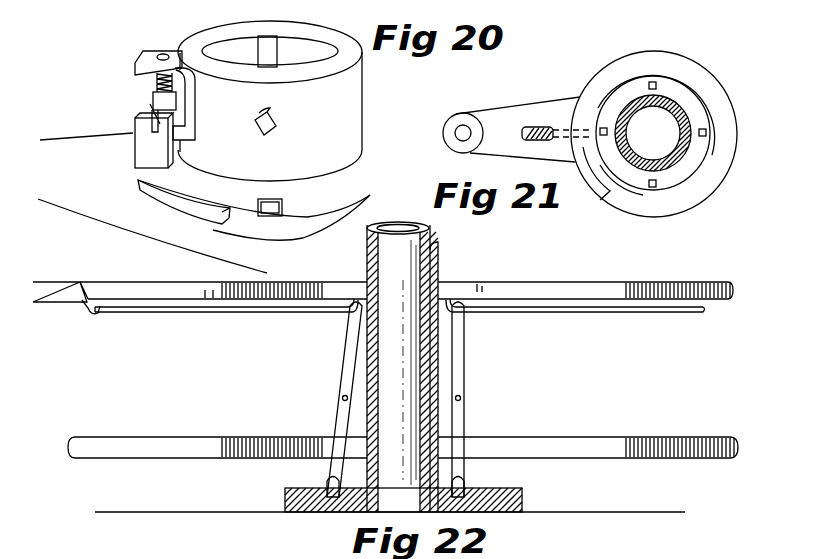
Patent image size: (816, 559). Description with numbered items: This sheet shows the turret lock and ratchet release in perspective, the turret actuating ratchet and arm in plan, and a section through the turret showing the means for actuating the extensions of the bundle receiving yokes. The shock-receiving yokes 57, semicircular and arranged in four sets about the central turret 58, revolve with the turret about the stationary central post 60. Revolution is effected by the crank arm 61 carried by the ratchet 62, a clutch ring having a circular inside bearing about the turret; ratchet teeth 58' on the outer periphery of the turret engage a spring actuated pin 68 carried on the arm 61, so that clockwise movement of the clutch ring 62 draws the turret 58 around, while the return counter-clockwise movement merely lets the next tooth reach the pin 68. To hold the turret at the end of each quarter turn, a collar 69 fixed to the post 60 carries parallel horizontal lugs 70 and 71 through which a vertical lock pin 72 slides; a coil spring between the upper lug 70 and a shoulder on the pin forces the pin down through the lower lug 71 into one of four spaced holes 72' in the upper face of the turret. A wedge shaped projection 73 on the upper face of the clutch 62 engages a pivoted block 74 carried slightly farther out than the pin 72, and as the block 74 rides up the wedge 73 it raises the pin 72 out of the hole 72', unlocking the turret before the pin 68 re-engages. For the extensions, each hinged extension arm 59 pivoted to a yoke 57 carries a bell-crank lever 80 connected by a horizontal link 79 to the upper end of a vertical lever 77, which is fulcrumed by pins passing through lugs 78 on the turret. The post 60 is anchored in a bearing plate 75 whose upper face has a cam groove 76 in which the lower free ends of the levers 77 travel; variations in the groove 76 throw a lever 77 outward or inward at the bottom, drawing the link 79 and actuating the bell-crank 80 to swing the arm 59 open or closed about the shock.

In FIG. 22, the shock-receiving yokes 57 is at (300, 283).
In FIG. 21, the turret 58 is at (682, 135).
In FIG. 22, the turret 58 is at (445, 372).
In FIG. 21, the ratchet teeth 58' is at (710, 168).
In FIG. 22, the hinged extension arm 59 is at (45, 283).
In FIG. 21, the central post 60 is at (653, 133).
In FIG. 22, the central post 60 is at (413, 352).
In FIG. 20, the crank arm 61 is at (70, 157).
In FIG. 21, the crank arm 61 is at (495, 117).
In FIG. 20, the ratchet 62 is at (192, 235).
In FIG. 21, the ratchet 62 is at (705, 83).
In FIG. 21, the spring actuated pin 68 is at (600, 197).
In FIG. 20, the collar 69 is at (358, 123).
In FIG. 20, the upper lug 70 is at (147, 57).
In FIG. 20, the lower lug 71 is at (184, 152).
In FIG. 20, the lock pin 72 is at (163, 75).
In FIG. 20, the holes 72' is at (298, 218).
In FIG. 21, the holes 72' is at (608, 84).
In FIG. 20, the wedge shaped projection 73 is at (213, 220).
In FIG. 20, the pivoted block 74 is at (144, 148).
In FIG. 22, the bearing plate 75 is at (507, 508).
In FIG. 22, the cam groove 76 is at (470, 502).
In FIG. 22, the vertical lever 77 is at (342, 363).
In FIG. 22, the lugs 78 is at (357, 403).
In FIG. 22, the horizontal link 79 is at (217, 315).
In FIG. 22, the bell-crank lever 80 is at (85, 314).